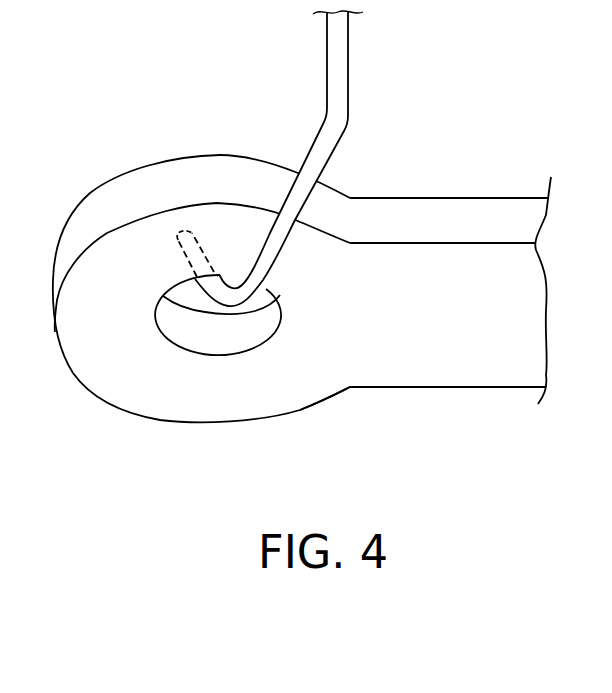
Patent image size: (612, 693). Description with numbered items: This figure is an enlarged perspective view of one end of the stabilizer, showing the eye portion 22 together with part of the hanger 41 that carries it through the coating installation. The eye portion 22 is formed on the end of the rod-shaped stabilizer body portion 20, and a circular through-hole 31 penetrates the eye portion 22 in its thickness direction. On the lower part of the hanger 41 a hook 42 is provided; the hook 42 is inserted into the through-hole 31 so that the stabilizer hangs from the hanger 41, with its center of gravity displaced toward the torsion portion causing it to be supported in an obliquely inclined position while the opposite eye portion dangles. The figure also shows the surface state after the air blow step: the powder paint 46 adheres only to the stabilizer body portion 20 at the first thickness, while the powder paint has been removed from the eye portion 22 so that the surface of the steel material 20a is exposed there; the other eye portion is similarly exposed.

The stabilizer body portion 20 is at (498, 194).
The steel material 20a is at (325, 342).
The eye portion 22 is at (74, 208).
The through-hole 31 is at (192, 300).
The hanger 41 is at (349, 53).
The hook 42 is at (206, 258).
The powder paint 46 is at (498, 368).